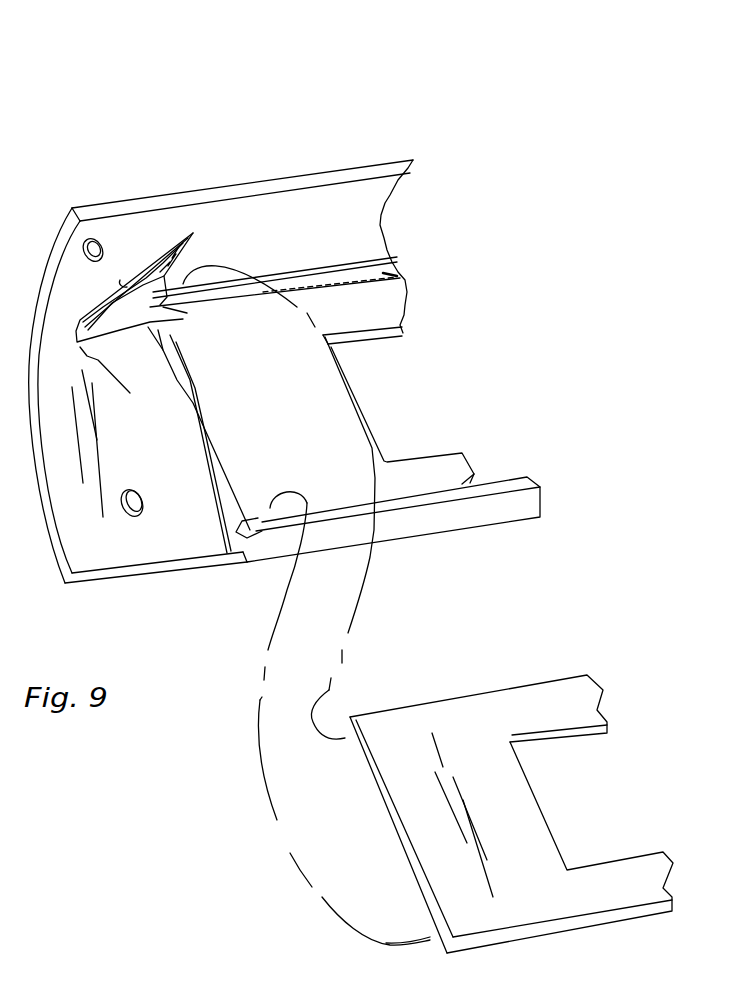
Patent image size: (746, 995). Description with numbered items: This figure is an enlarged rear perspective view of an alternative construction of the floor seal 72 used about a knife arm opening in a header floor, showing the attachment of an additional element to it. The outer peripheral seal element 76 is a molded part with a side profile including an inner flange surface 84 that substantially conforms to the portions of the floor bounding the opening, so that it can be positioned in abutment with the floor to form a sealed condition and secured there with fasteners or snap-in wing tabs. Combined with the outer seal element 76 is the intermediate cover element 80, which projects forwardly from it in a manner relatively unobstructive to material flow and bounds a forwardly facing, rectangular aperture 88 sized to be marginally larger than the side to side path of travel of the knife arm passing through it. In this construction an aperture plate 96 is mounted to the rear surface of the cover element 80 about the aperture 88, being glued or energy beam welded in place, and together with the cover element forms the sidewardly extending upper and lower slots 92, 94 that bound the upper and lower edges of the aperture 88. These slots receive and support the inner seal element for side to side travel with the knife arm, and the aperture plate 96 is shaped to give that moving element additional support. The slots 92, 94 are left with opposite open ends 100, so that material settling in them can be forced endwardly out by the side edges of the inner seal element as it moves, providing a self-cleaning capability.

The floor seal 72 is at (410, 106).
The outer peripheral seal element 76 is at (360, 197).
The intermediate cover element 80 is at (433, 473).
The inner flange surface 84 is at (122, 228).
The aperture 88 is at (395, 363).
The upper slot 92 is at (383, 273).
The lower slot 94 is at (473, 473).
The aperture plate 96 is at (550, 677).
The open ends 100 is at (250, 503).